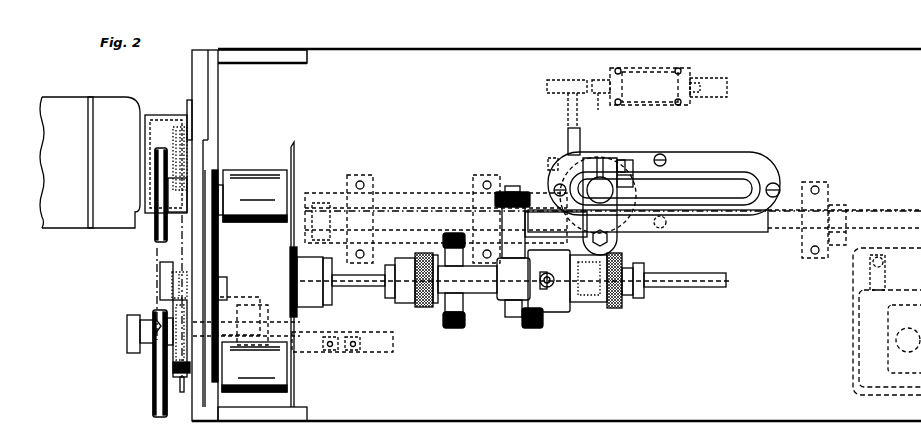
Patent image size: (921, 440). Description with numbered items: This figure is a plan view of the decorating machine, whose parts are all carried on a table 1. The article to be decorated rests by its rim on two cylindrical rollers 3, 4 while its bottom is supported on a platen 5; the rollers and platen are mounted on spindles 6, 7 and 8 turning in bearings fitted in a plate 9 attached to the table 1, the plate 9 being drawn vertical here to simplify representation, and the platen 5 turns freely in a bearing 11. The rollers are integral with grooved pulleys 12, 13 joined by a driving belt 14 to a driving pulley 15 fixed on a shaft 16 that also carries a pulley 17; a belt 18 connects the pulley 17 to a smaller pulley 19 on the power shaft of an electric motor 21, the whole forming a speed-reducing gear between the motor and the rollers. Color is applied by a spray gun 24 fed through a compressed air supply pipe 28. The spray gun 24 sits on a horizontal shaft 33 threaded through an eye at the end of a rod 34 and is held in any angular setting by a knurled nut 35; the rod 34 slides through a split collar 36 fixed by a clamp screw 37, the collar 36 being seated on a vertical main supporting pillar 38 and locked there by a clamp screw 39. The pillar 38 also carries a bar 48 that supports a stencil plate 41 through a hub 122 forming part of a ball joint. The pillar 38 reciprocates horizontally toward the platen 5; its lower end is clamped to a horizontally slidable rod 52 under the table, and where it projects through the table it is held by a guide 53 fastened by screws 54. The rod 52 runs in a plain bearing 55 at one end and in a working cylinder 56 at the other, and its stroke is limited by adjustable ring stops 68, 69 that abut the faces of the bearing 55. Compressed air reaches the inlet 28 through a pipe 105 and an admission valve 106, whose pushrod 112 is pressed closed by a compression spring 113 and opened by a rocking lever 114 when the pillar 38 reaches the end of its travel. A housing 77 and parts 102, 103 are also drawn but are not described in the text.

The table 1 is at (731, 413).
The cylindrical roller 3 is at (253, 382).
The cylindrical roller 4 is at (257, 183).
The inclined platen 5 is at (222, 287).
The spindle 6 is at (182, 392).
The spindle 7 is at (180, 242).
The spindle 8 is at (208, 275).
The inclined plate 9 is at (197, 237).
The bearing 11 is at (172, 282).
The grooved pulley 12 is at (155, 382).
The grooved pulley 13 is at (155, 232).
The driving belt 14 is at (157, 253).
The driving pulley 15 is at (157, 315).
The shaft 16 is at (187, 332).
The pulley 17 is at (173, 390).
The driving belt 18 is at (173, 262).
The pulley 19 is at (185, 145).
The electric motor 21 is at (115, 217).
The spray gun 24 is at (482, 292).
The compressed air supply pipe 28 is at (546, 290).
The horizontal shaft 33 is at (512, 250).
The rod 34 is at (552, 223).
The knurled nut 35 is at (525, 193).
The split collar 36 is at (618, 238).
The clamp screw 37 is at (618, 242).
The main supporting pillar 38 is at (602, 187).
The clamp screw 39 is at (625, 163).
The stencil plate 41 is at (295, 157).
The bar 48 is at (380, 280).
The horizontally slidable rod 52 is at (788, 223).
The guide 53 is at (705, 173).
The screw 54 is at (778, 183).
The plain bearing 55 is at (816, 257).
The working cylinder 56 is at (423, 193).
The adjustable ring stop 68 is at (672, 235).
The adjustable ring stop 69 is at (839, 237).
The housing 77 is at (859, 354).
The block 102 is at (296, 335).
The linkage 103 is at (270, 327).
The pipe 105 is at (720, 82).
The admission valve 106 is at (657, 93).
The pushrod 112 is at (593, 82).
The compression spring 113 is at (600, 93).
The rocking lever 114 is at (568, 117).
The hub 122 is at (328, 285).